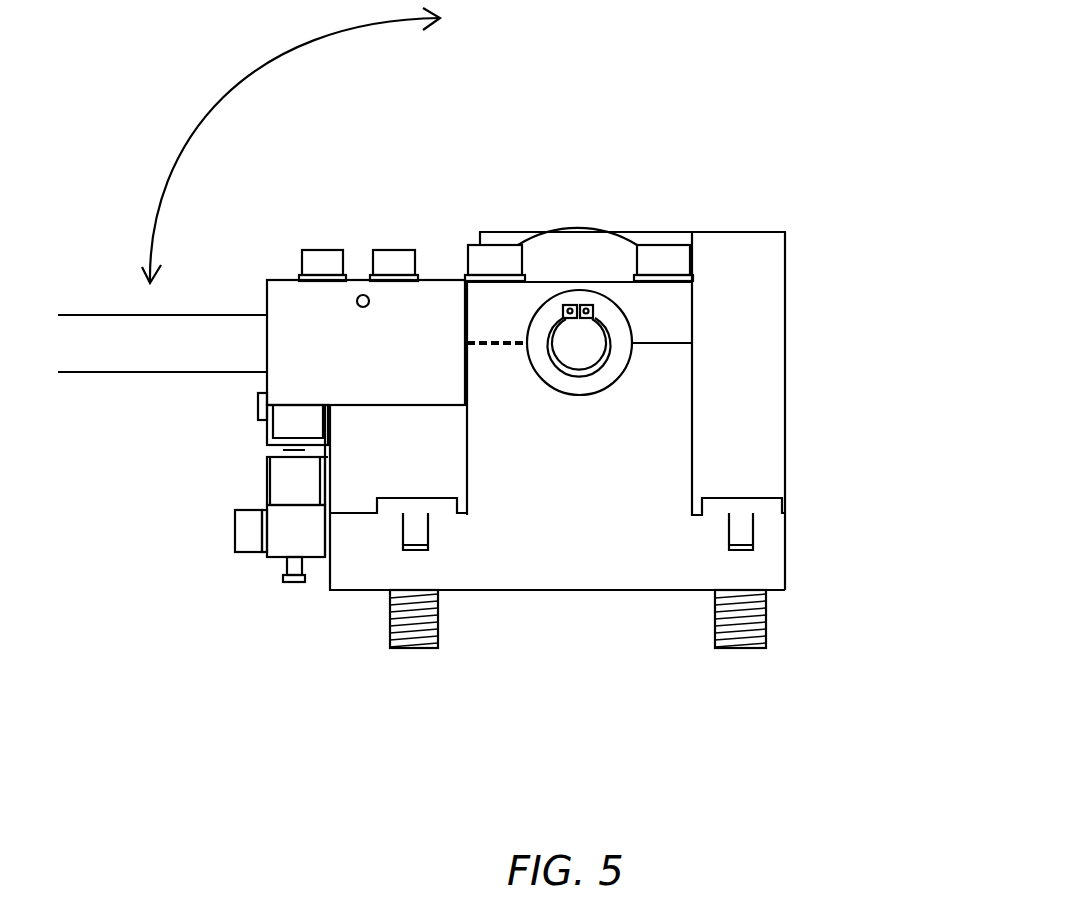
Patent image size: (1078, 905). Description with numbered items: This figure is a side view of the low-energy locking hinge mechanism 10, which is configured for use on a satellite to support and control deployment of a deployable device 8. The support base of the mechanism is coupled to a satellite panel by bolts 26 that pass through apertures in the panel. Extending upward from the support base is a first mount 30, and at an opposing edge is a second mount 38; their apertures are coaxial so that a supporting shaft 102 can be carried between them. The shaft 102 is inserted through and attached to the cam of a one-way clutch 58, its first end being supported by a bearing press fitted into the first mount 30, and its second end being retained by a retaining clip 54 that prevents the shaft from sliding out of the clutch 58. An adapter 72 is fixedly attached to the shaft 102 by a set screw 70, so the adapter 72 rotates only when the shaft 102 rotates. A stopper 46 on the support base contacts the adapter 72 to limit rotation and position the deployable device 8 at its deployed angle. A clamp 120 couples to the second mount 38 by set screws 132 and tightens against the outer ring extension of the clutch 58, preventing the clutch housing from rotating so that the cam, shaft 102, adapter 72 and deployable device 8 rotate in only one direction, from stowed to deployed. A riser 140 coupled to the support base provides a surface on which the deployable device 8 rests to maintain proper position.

The deployable device 8 is at (190, 326).
The low-energy locking hinge mechanism 10 is at (838, 75).
The bolts 26 is at (767, 627).
The first mount 30 is at (503, 240).
The second mount 38 is at (663, 387).
The stopper 46 is at (742, 247).
The retaining clip 54 is at (552, 373).
The one-way clutch 58 is at (587, 248).
The set screw 70 is at (390, 250).
The adapter 72 is at (432, 297).
The supporting shaft 102 is at (580, 348).
The clamp 120 is at (673, 307).
The set screws 132 is at (663, 260).
The riser 140 is at (285, 483).